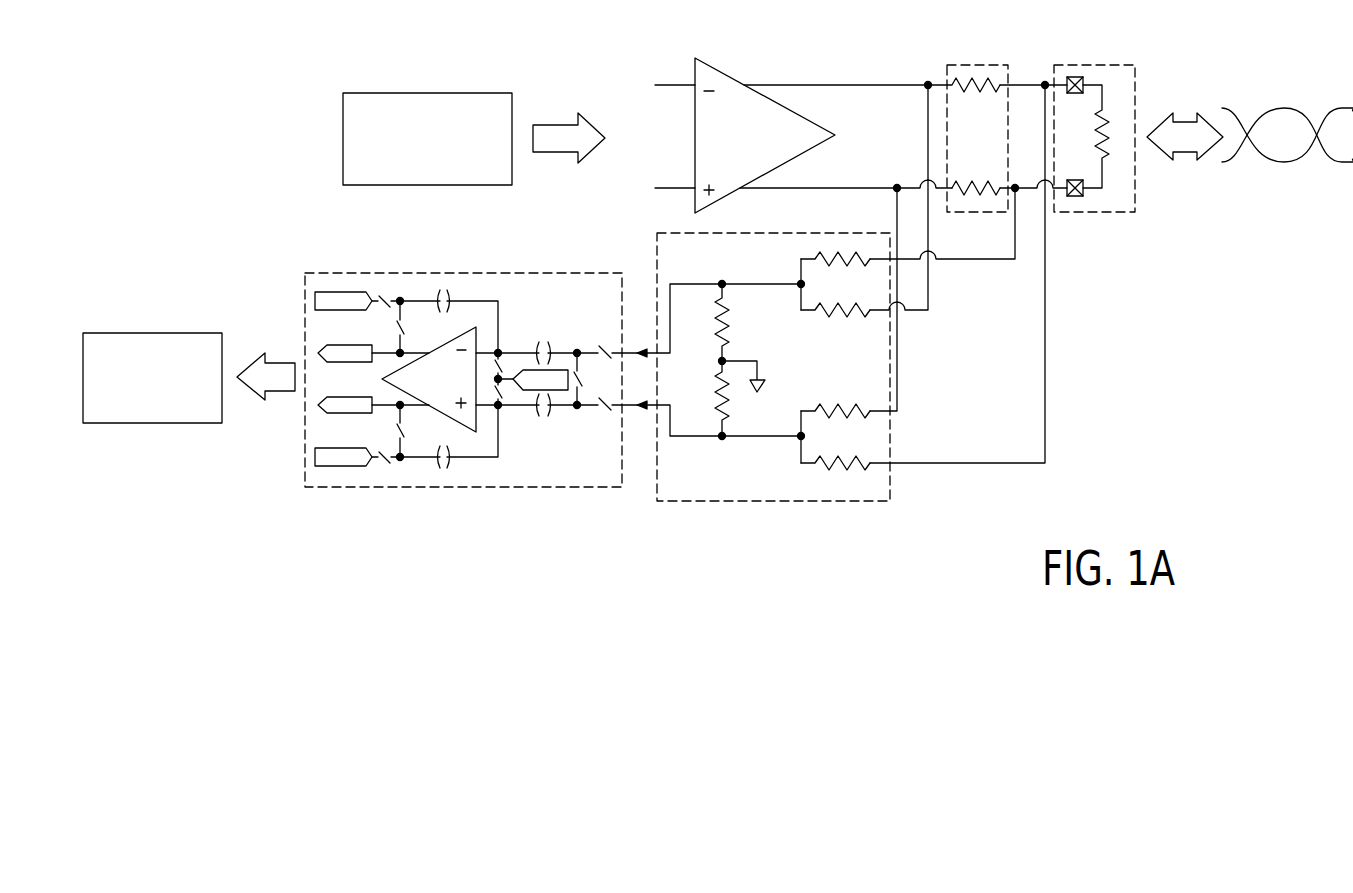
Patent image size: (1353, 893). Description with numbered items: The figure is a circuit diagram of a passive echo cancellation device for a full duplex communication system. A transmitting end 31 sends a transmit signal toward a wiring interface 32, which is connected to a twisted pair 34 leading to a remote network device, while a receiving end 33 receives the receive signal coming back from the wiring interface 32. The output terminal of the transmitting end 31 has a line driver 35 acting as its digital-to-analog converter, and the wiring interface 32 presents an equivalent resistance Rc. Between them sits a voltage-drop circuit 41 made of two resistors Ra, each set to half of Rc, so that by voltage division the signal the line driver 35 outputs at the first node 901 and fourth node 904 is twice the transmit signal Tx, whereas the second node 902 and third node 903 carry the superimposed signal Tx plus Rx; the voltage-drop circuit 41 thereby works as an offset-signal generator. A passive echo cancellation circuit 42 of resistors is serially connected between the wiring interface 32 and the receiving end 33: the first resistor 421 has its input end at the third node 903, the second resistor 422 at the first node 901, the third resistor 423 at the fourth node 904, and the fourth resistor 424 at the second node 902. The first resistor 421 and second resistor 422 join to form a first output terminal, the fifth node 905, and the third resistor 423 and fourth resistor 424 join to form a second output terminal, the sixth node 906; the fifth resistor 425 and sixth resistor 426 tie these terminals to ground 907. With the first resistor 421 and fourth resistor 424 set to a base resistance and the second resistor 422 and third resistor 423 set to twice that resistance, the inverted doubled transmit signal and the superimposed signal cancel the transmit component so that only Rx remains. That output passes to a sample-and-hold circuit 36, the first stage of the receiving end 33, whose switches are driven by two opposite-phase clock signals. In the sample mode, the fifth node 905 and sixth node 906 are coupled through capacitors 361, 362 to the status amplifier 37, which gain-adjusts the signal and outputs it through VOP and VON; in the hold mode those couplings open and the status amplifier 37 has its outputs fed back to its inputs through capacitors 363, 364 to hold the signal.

The transmitting end 31 is at (445, 92).
The wiring interface 32 is at (1083, 214).
The receiving end 33 is at (157, 424).
The twisted pair 34 is at (1280, 107).
The line driver 35 is at (729, 95).
The sample-and-hold circuit 36 is at (474, 381).
The status amplifier 37 is at (441, 345).
The voltage-drop circuit 41 is at (986, 62).
The passive echo cancellation circuit 42 is at (756, 381).
The capacitor C 361 is at (540, 344).
The capacitor C 362 is at (539, 420).
The capacitor 363 is at (446, 294).
The capacitor 364 is at (448, 466).
The first resistor 421 is at (838, 263).
The second resistor 422 is at (838, 314).
The third resistor 423 is at (838, 415).
The fourth resistor 424 is at (838, 467).
The fifth resistor 425 is at (717, 330).
The sixth resistor 426 is at (714, 401).
The first node 901 is at (925, 83).
The second node 902 is at (1045, 83).
The third node 903 is at (1016, 192).
The fourth node 904 is at (897, 186).
The fifth node 905 is at (799, 283).
The sixth node 906 is at (800, 434).
The ground 907 is at (764, 373).